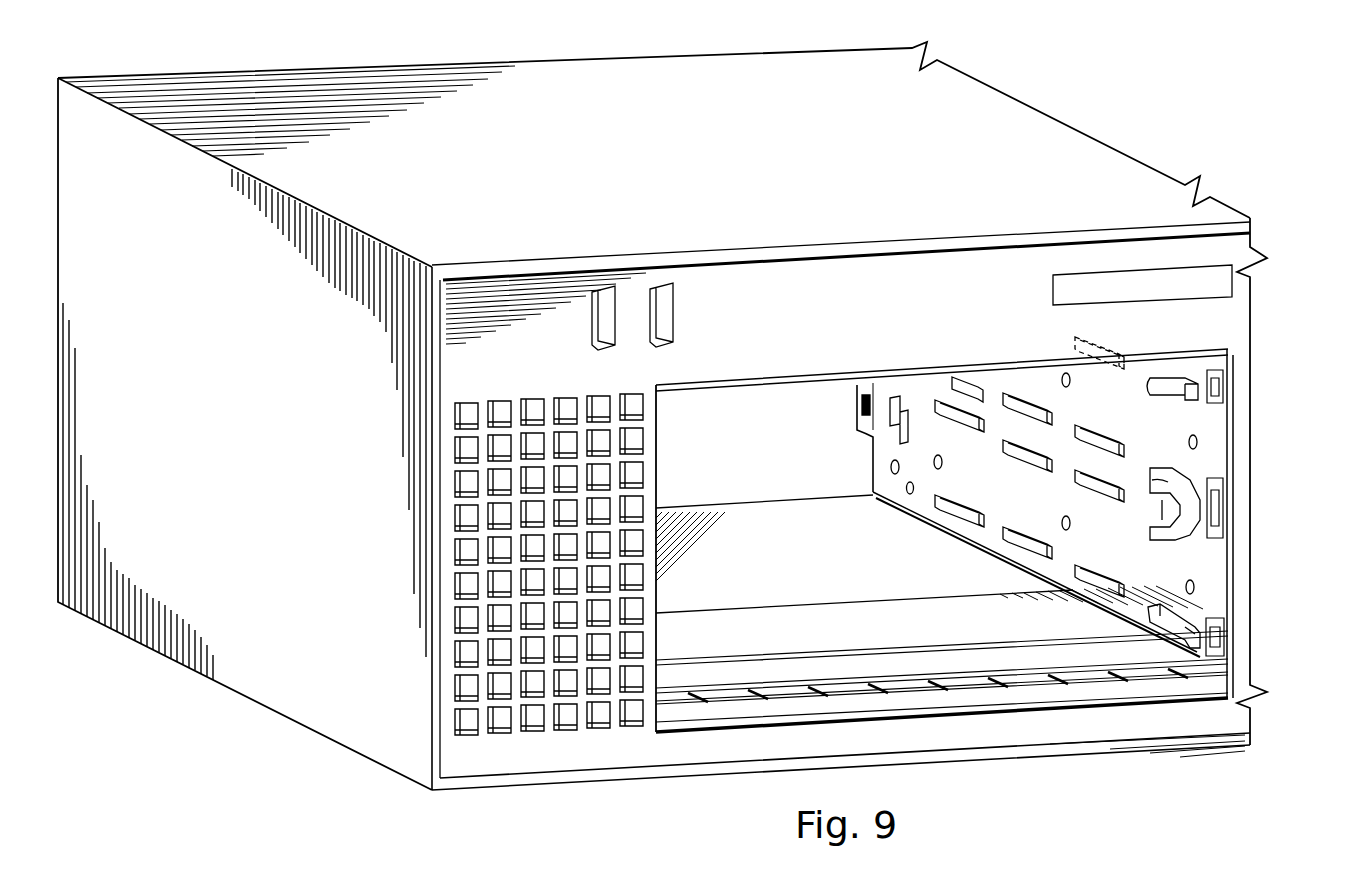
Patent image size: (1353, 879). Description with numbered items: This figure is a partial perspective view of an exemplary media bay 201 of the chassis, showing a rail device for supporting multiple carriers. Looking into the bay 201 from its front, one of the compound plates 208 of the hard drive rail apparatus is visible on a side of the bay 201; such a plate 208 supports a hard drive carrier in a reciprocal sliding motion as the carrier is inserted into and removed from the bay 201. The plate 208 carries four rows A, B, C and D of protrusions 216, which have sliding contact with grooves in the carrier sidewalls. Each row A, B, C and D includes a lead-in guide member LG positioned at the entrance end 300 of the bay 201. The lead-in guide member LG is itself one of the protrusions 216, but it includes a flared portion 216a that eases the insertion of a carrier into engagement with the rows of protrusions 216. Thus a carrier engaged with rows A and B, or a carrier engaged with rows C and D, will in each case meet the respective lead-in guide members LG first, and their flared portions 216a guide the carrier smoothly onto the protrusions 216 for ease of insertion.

The entrance end 300 is at (1237, 438).
The bay 201 is at (783, 412).
The compound plate 208 is at (873, 456).
The protrusions 216 is at (960, 494).
The flared portion 216a is at (1193, 382).
The lead-in guide member LG is at (1180, 398).
The row A is at (958, 531).
The row B is at (946, 413).
The row C is at (968, 381).
The row D is at (1075, 345).